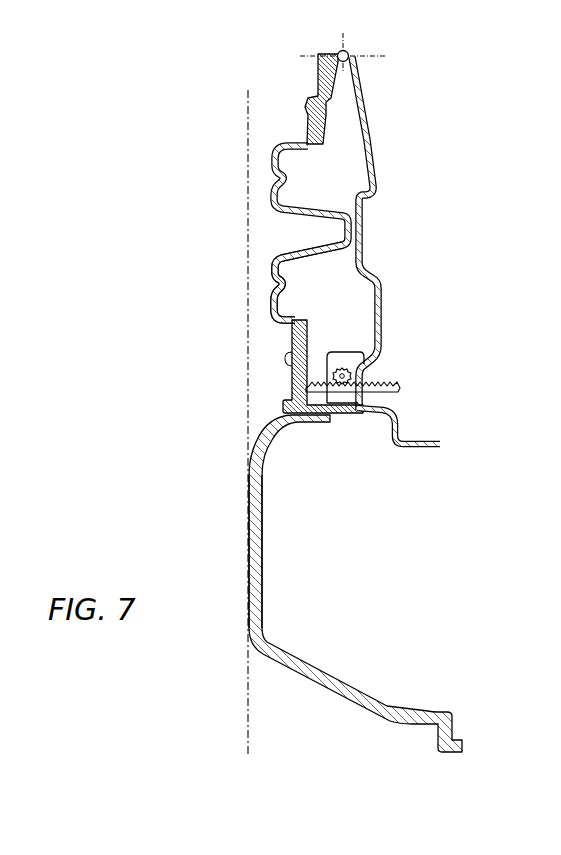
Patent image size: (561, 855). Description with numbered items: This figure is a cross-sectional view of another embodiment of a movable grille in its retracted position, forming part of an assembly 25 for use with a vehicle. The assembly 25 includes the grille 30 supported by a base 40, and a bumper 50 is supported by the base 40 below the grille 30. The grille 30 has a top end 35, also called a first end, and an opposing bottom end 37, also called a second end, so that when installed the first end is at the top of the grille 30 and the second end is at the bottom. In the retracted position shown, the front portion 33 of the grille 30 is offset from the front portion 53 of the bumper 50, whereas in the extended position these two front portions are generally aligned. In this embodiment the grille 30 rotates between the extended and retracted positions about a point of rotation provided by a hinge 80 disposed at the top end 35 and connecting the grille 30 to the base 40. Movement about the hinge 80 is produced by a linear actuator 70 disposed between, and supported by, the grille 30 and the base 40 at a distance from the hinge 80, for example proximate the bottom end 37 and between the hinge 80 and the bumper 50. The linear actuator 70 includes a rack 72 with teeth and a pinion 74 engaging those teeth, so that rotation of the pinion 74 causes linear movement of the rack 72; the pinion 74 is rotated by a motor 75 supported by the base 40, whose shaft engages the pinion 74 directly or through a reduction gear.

The assembly 25 is at (467, 85).
The movable grille 30 is at (276, 152).
The front portion of the grille 33 is at (270, 303).
The top end 35 is at (318, 78).
The bottom end 37 is at (286, 407).
The base 40 is at (370, 138).
The bumper 50 is at (342, 697).
The front portion of the bumper 53 is at (255, 543).
The linear actuator 70 is at (338, 386).
The rack 72 is at (388, 394).
The pinion 74 is at (343, 380).
The motor 75 is at (356, 352).
The hinge 80 is at (346, 51).